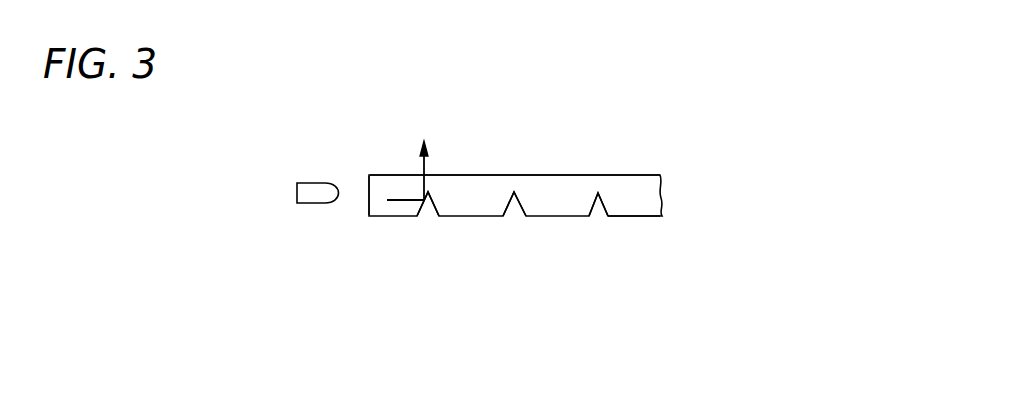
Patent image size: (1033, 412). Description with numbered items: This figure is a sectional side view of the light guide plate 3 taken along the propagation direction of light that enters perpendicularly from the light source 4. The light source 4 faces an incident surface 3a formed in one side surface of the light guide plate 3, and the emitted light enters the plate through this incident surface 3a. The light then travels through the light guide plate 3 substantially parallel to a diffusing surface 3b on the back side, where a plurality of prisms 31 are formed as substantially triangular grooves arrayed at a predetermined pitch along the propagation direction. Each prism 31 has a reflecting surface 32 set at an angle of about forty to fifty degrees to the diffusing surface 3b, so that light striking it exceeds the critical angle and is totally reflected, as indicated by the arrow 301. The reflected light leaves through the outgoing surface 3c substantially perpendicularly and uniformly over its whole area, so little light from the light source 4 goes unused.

The light guide plate 3 is at (673, 235).
The incident surface 3a is at (369, 188).
The diffusing surface 3b is at (640, 216).
The outgoing surface 3c is at (635, 174).
The prisms 31 is at (598, 213).
The reflecting surface 32 is at (417, 211).
The arrow 301 is at (425, 167).
The light source 4 is at (308, 203).